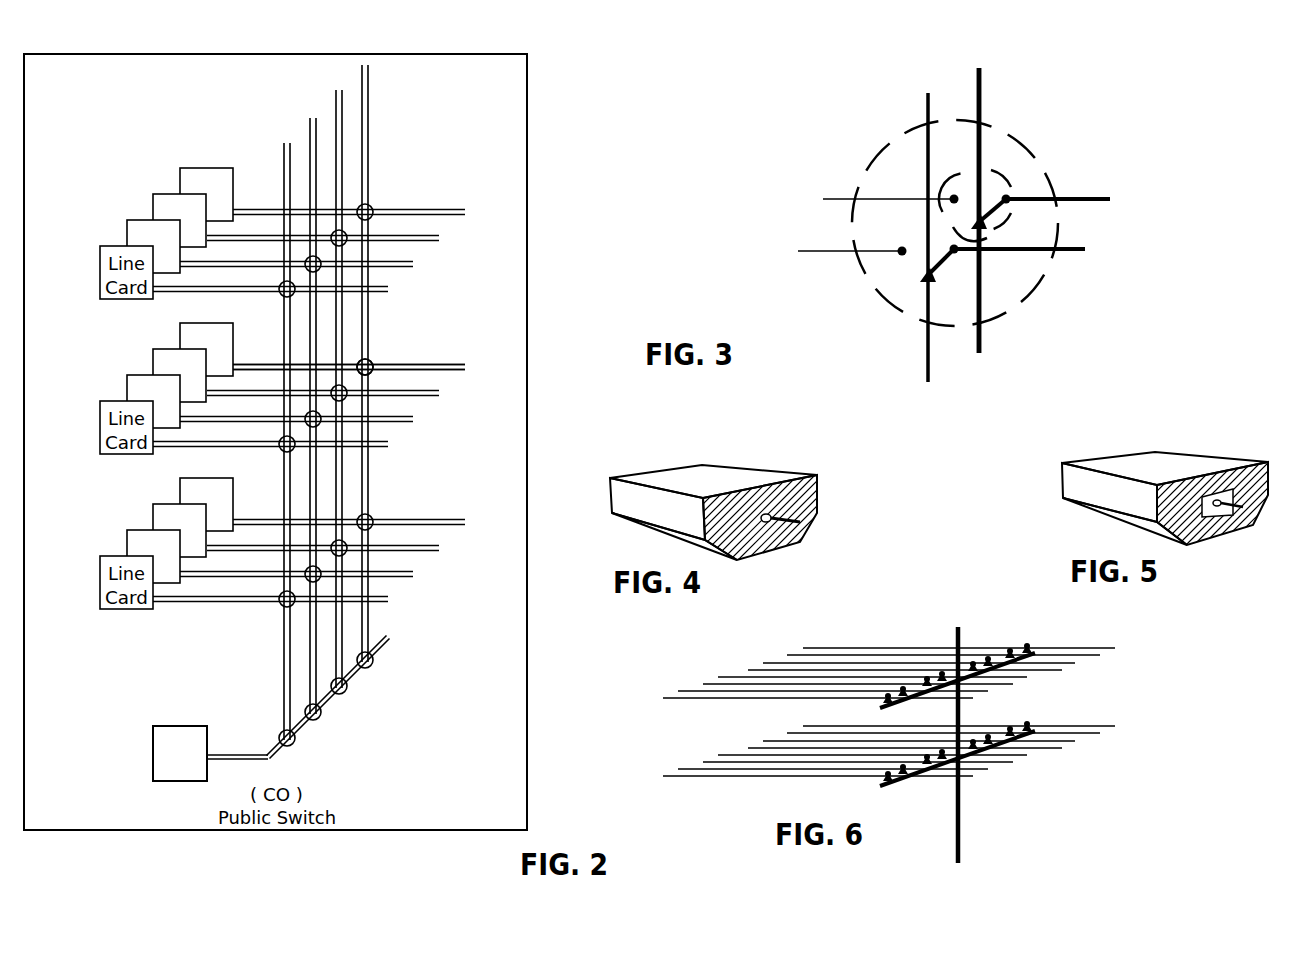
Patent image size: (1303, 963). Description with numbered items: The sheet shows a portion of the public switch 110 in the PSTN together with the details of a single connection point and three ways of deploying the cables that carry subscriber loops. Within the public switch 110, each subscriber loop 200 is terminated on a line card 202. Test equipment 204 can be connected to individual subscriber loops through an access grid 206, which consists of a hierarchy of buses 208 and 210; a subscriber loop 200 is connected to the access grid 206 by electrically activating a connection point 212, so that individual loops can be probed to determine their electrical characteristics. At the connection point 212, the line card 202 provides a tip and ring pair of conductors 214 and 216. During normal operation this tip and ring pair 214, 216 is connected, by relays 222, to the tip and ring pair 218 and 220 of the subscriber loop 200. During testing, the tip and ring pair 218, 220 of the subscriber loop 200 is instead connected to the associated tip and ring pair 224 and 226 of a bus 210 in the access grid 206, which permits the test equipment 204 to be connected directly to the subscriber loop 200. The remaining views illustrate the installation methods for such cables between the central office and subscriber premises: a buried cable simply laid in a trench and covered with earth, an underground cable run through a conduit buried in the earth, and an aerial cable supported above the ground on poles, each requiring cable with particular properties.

In FIG. 2, the public switch 110 is at (518, 100).
In FIG. 2, the subscriber loop 200 is at (425, 366).
In FIG. 3, the subscriber loop 200 is at (1152, 187).
In FIG. 2, the line card 202 is at (180, 328).
In FIG. 2, the test equipment 204 is at (181, 726).
In FIG. 2, the access grid 206 is at (401, 478).
In FIG. 2, the bus 208 is at (389, 639).
In FIG. 2, the bus 210 is at (284, 160).
In FIG. 3, the bus 210 is at (988, 61).
In FIG. 2, the connection point 212 is at (371, 362).
In FIG. 3, the connection point 212 is at (882, 152).
In FIG. 3, the tip conductor 214 is at (830, 251).
In FIG. 3, the ring conductor 216 is at (845, 199).
In FIG. 3, the tip conductor of subscriber loop 218 is at (1077, 251).
In FIG. 3, the ring conductor of subscriber loop 220 is at (1100, 196).
In FIG. 3, the relays 222 is at (981, 168).
In FIG. 3, the tip conductor of bus 224 is at (929, 358).
In FIG. 3, the ring conductor of bus 226 is at (982, 80).